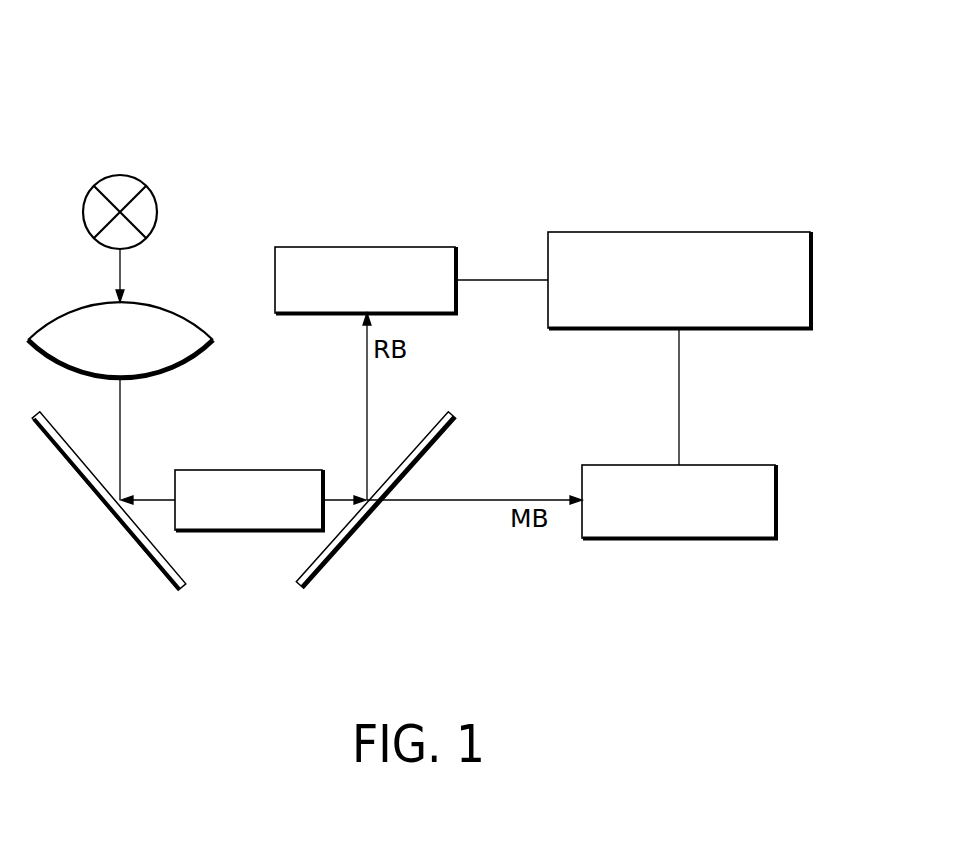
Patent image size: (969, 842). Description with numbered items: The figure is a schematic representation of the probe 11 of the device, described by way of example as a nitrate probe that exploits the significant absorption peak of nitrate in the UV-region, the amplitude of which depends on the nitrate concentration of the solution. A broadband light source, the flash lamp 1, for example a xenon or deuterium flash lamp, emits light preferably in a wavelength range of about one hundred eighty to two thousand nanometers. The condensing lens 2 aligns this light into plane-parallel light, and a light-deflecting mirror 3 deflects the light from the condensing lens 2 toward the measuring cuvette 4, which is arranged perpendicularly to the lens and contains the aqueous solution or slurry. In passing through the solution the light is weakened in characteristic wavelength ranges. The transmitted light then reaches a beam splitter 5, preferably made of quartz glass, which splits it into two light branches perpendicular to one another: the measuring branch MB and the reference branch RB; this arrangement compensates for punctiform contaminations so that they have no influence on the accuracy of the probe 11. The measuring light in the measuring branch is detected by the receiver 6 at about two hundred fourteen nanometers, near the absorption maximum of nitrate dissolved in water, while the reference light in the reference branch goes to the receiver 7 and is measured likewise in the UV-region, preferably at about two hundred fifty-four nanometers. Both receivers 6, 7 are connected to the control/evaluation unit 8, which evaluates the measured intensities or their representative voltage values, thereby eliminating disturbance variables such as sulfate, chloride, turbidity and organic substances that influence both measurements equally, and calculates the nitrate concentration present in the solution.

The flash lamp 1 is at (157, 212).
The condensing lens 2 is at (134, 352).
The light-deflecting mirror 3 is at (120, 513).
The measuring cuvette 4 is at (238, 531).
The beam splitter 5 is at (357, 523).
The receiver 6 is at (697, 538).
The receiver 7 is at (373, 247).
The control/evaluation unit 8 is at (742, 232).
The probe 11 is at (557, 165).